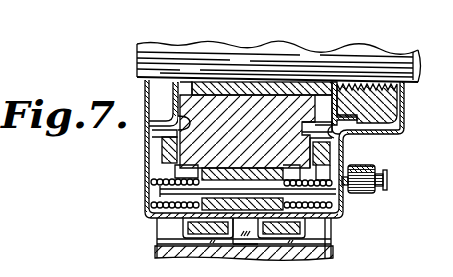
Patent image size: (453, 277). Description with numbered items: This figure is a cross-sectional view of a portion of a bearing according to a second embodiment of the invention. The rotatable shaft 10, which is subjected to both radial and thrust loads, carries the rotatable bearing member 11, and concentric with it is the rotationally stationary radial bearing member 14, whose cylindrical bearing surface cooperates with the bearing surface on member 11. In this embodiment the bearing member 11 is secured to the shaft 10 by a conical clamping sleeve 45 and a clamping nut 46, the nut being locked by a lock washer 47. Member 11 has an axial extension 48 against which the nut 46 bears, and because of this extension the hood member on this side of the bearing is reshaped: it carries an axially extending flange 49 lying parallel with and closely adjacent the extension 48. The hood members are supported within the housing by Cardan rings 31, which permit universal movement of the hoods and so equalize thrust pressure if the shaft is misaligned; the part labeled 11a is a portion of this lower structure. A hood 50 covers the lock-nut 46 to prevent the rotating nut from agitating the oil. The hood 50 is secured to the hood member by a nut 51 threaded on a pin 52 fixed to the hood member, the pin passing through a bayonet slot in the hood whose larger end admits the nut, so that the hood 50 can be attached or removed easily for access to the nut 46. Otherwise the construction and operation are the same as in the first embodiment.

The rotatable shaft 10 is at (163, 54).
The rotatable bearing member 11 is at (161, 143).
The lower block member 11a is at (323, 226).
The radial bearing member 14 is at (252, 168).
The Cardan rings 31 is at (213, 230).
The conical clamping sleeve 45 is at (252, 84).
The clamping nut 46 is at (388, 108).
The lock washer 47 is at (335, 92).
The axial extension 48 is at (322, 100).
The axially extending flange 49 is at (337, 144).
The hood 50 is at (405, 133).
The nut 51 is at (361, 191).
The pin 52 is at (388, 179).